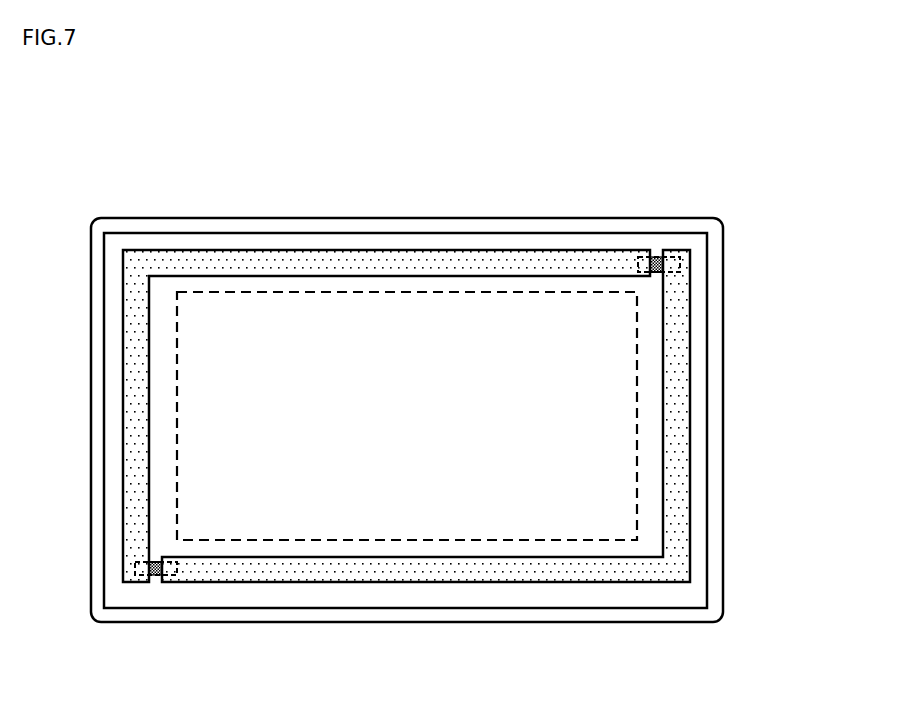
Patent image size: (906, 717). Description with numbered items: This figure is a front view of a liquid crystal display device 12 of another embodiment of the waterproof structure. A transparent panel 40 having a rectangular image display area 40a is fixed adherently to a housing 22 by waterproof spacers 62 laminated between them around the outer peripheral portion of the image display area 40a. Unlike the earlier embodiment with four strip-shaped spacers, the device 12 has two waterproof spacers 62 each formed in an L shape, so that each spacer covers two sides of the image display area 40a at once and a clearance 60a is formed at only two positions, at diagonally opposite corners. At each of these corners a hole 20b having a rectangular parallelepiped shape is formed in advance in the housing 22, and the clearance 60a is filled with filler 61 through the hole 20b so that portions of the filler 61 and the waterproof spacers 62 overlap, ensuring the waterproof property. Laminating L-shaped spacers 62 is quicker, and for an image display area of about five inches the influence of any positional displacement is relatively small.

The liquid crystal display device 12 is at (388, 101).
The housing 22 is at (102, 221).
The transparent panel 40 is at (115, 328).
The image display area 40a is at (330, 485).
The waterproof spacer 62 is at (425, 263).
The filler 61 is at (658, 260).
The hole 20b is at (642, 258).
The clearance 60a is at (664, 273).